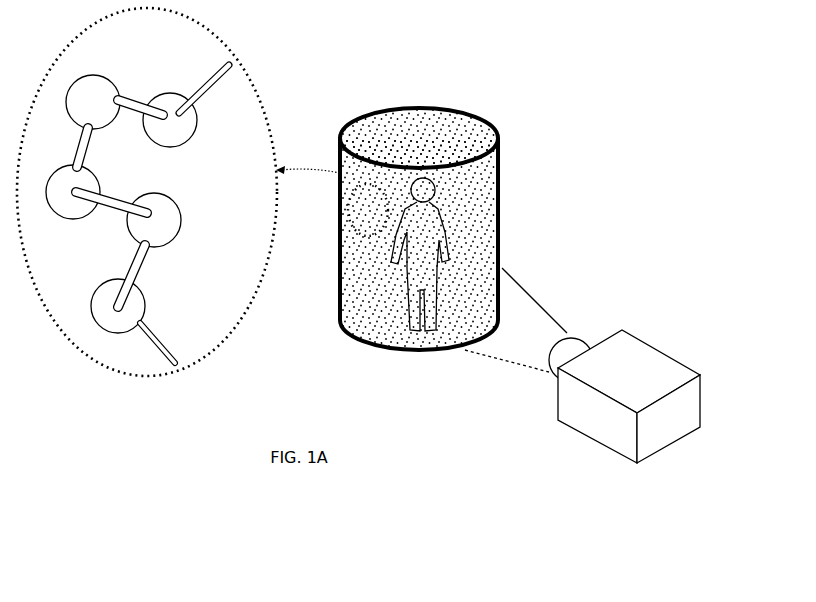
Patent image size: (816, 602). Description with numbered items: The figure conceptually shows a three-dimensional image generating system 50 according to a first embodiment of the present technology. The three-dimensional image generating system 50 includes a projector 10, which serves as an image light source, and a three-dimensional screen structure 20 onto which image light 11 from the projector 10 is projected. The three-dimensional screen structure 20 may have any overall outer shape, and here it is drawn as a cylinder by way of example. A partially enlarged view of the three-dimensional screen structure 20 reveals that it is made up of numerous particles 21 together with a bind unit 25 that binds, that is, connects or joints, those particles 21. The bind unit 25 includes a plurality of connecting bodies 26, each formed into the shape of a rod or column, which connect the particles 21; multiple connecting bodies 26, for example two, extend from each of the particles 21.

The projector 10 is at (642, 352).
The image light 11 is at (521, 292).
The three-dimensional screen structure 20 is at (424, 106).
The particles 21 is at (96, 79).
The bind unit 25 is at (136, 99).
The connecting bodies 26 is at (209, 96).
The three-dimensional image generating system 50 is at (574, 106).